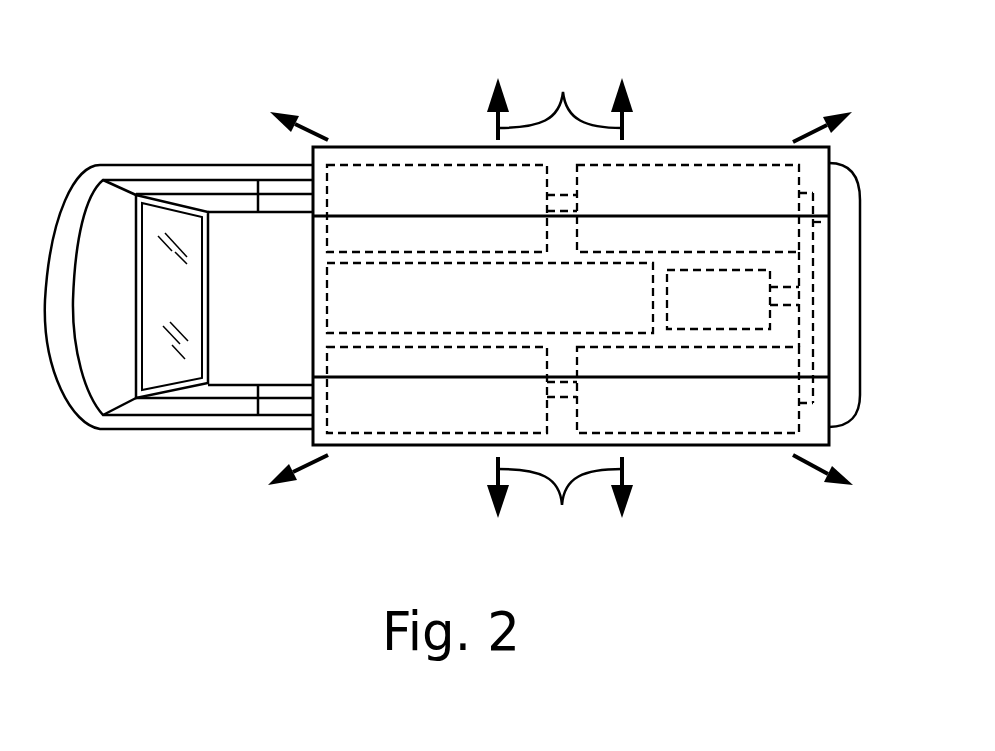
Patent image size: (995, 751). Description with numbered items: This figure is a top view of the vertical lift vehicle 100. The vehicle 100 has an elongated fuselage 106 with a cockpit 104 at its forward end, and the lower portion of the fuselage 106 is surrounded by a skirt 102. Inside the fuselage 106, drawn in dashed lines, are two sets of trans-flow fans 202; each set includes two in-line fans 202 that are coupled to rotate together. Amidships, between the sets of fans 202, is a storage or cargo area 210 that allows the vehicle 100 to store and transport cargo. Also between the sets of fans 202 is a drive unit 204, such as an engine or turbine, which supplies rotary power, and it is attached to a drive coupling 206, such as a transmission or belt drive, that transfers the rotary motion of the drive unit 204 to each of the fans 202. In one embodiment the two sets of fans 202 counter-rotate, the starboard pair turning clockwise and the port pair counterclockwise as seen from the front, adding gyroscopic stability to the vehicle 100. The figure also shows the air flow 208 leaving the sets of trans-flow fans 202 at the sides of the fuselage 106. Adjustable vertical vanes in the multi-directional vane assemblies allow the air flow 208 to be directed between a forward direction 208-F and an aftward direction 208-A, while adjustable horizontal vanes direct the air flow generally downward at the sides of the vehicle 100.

The vertical lift vehicle 100 is at (147, 79).
The skirt 102 is at (182, 432).
The cockpit 104 is at (268, 290).
The fuselage 106 is at (687, 147).
The trans-flow fans 202 is at (405, 163).
The drive unit 204 is at (712, 264).
The drive coupling 206 is at (832, 221).
The air flow 208 is at (560, 302).
The forward direction 208-F is at (313, 130).
The aftward direction 208-A is at (805, 132).
The cargo area 210 is at (440, 307).